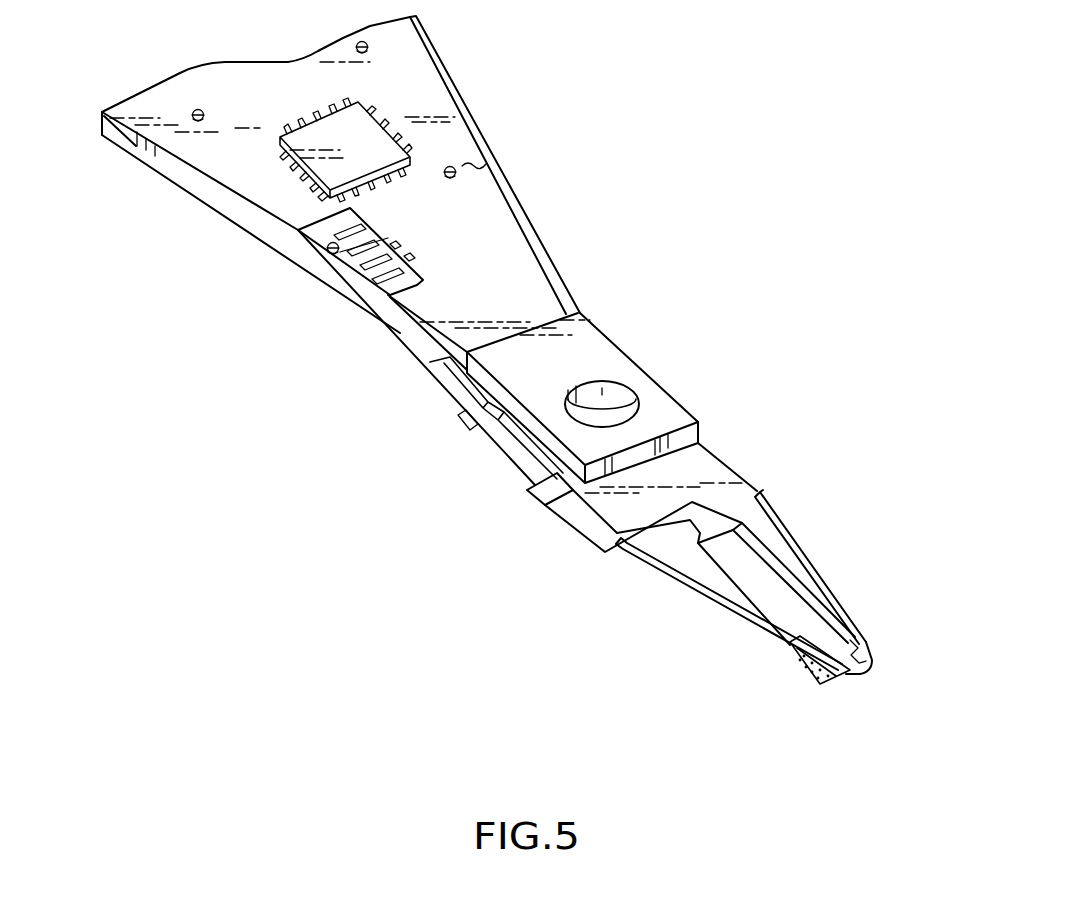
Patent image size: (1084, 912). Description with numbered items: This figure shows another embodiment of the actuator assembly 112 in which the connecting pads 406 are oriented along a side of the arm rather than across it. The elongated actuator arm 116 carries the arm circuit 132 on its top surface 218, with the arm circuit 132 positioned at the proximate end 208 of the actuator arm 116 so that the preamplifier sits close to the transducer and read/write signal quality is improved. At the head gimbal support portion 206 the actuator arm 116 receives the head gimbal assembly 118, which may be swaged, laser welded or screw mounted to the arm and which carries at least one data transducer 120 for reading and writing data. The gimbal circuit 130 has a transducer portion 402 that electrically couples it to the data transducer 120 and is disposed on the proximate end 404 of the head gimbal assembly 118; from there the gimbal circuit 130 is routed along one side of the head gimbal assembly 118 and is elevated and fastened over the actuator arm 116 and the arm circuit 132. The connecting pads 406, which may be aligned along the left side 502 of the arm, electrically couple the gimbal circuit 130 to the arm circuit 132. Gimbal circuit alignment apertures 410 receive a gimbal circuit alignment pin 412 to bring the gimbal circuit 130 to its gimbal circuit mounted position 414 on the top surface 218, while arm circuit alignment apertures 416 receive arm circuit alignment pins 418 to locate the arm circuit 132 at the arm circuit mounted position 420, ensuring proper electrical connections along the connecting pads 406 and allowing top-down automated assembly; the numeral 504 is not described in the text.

The actuator assembly 112 is at (630, 141).
The actuator arm 116 is at (530, 210).
The head gimbal assembly 118 is at (810, 509).
The data transducer 120 is at (822, 684).
The gimbal circuit 130 is at (583, 538).
The arm circuit 132 is at (282, 108).
The head gimbal support portion 206 is at (620, 357).
The proximate end 208 is at (678, 412).
The top surface 218 is at (199, 175).
The transducer portion 402 is at (882, 686).
The proximate end of the head gimbal assembly 404 is at (795, 634).
The connecting pads 406 is at (345, 232).
The gimbal circuit alignment apertures 410 is at (333, 257).
The gimbal circuit alignment pin 412 is at (397, 241).
The gimbal circuit mounted position 414 is at (330, 292).
The arm circuit alignment apertures 416 is at (474, 166).
The arm circuit alignment pins 418 is at (368, 47).
The arm circuit mounted position 420 is at (236, 255).
The left side 502 is at (203, 158).
The board outer edge 504 is at (513, 183).